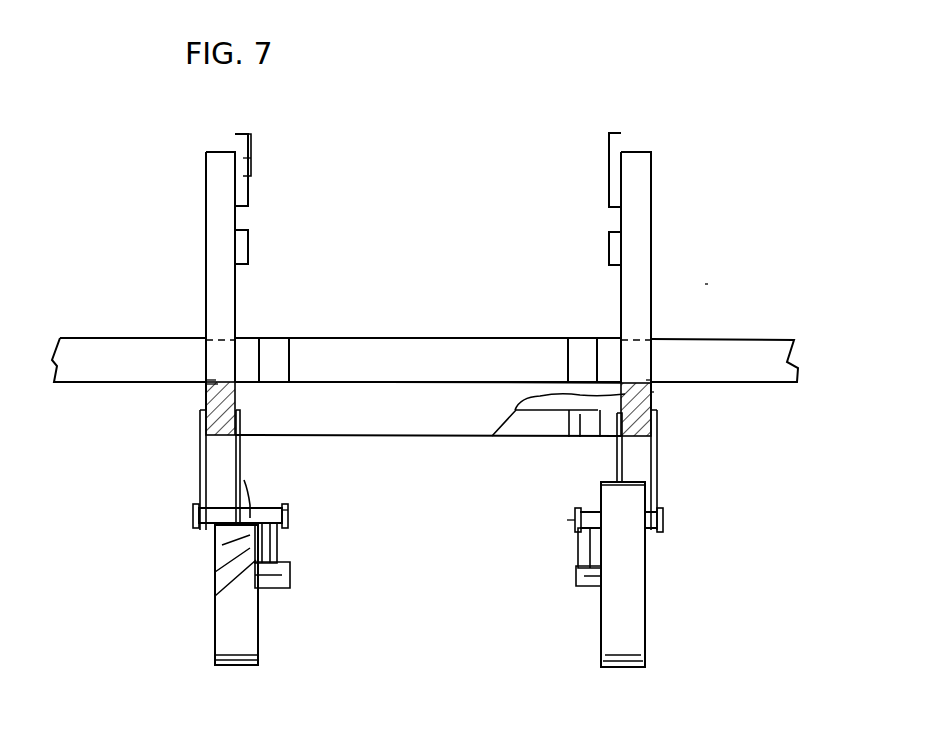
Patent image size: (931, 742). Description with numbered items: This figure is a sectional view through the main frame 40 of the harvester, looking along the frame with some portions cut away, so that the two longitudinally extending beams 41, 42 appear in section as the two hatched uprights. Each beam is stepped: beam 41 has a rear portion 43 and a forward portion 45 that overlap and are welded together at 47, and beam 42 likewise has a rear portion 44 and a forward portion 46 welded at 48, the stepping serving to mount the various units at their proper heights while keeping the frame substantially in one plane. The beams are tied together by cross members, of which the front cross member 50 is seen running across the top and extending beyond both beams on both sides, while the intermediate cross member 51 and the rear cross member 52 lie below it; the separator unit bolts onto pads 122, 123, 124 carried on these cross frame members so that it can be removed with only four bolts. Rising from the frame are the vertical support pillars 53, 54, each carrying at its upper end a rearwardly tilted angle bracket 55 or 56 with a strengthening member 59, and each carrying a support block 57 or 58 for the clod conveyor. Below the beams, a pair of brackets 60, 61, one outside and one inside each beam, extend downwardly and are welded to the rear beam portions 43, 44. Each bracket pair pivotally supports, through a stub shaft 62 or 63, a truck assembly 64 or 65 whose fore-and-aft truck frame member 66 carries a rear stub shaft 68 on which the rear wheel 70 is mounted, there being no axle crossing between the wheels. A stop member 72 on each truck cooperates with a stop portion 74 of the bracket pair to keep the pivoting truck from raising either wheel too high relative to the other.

The main frame 40 is at (708, 284).
The longitudinal beam 41 is at (218, 384).
The longitudinal beam 42 is at (654, 392).
The rear portion of beam 43 is at (215, 420).
The rear portion of beam 44 is at (646, 425).
The forward portion of beam 45 is at (206, 338).
The forward portion of beam 46 is at (651, 340).
The weld 47 is at (216, 378).
The weld 48 is at (651, 377).
The front cross member 50 is at (447, 340).
The intermediate cross member 51 is at (512, 415).
The rear cross member 52 is at (406, 427).
The vertical support pillar 53 is at (207, 185).
The vertical support pillar 54 is at (643, 183).
The angle bracket 55 is at (238, 134).
The angle bracket 56 is at (615, 142).
The support block 57 is at (247, 248).
The support block 58 is at (609, 248).
The strengthening member 59 is at (251, 142).
The bracket 60 is at (203, 476).
The bracket 61 is at (241, 418).
The stub shaft 62 is at (200, 528).
The stub shaft 63 is at (592, 514).
The truck assembly 64 is at (567, 522).
The truck assembly 65 is at (294, 514).
The truck frame member 66 is at (284, 545).
The rear stub shaft 68 is at (285, 583).
The rear wheel 70 is at (258, 610).
The stop member 72 is at (259, 515).
The stop portion 74 is at (228, 548).
The pad 122 is at (567, 437).
The pad 123 is at (288, 338).
The pad 124 is at (584, 338).